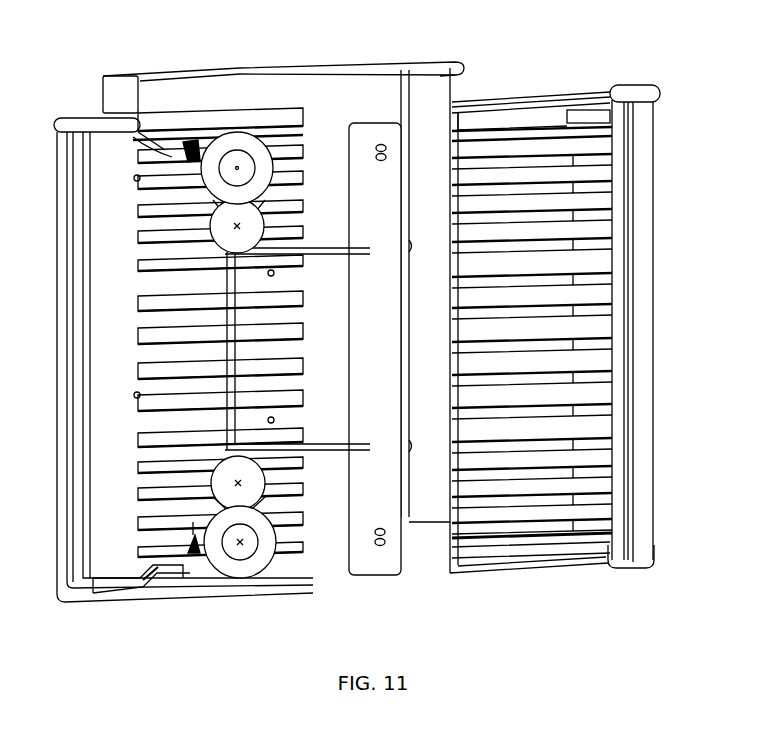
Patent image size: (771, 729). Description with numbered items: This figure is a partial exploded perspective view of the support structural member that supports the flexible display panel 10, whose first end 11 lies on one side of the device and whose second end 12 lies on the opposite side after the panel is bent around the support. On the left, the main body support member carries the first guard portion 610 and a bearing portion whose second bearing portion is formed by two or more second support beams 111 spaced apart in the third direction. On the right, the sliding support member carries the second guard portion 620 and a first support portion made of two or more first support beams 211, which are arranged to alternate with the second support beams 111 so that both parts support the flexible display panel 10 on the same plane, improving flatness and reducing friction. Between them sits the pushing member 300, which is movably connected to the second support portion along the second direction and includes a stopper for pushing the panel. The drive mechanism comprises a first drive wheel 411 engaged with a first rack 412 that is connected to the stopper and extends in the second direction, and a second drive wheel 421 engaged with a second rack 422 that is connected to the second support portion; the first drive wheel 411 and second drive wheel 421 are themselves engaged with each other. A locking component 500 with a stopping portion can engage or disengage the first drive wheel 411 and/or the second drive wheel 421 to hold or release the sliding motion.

The flexible display panel 10 is at (298, 71).
The first end 11 is at (105, 107).
The second support beam 111 is at (162, 150).
The second end 12 is at (402, 517).
The first support beam 211 is at (503, 163).
The pushing member 300 is at (377, 125).
The first drive wheel 411 is at (240, 548).
The first rack 412 is at (320, 255).
The second drive wheel 421 is at (238, 166).
The second rack 422 is at (568, 115).
The locking component 500 is at (180, 580).
The first guard portion 610 is at (76, 113).
The second guard portion 620 is at (643, 293).